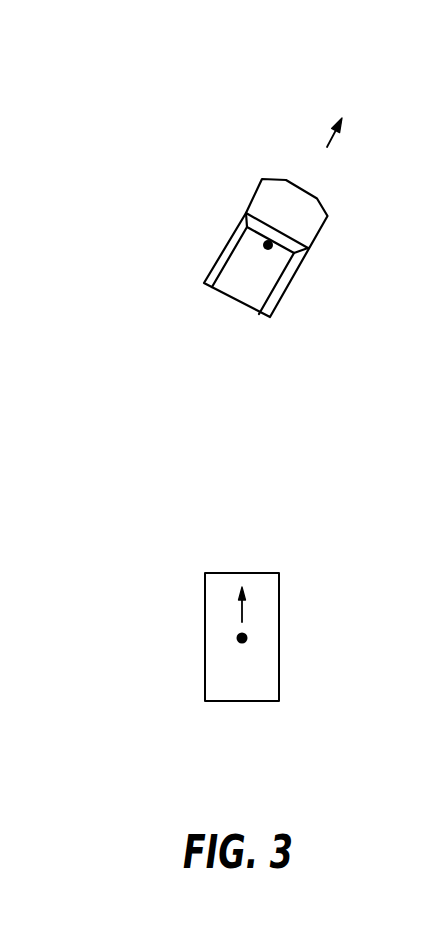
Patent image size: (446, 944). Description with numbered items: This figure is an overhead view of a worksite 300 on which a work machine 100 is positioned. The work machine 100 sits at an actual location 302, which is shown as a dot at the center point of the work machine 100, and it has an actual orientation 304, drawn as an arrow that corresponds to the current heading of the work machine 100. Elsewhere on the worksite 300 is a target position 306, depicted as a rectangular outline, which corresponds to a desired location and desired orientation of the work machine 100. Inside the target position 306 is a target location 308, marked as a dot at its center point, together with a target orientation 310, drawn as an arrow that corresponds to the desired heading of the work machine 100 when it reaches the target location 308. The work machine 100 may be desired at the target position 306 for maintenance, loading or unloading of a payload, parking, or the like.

The worksite 300 is at (120, 56).
The work machine 100 is at (255, 194).
The actual location 302 is at (273, 248).
The actual orientation 304 is at (328, 147).
The target position 306 is at (205, 595).
The target location 308 is at (248, 638).
The target orientation 310 is at (244, 615).